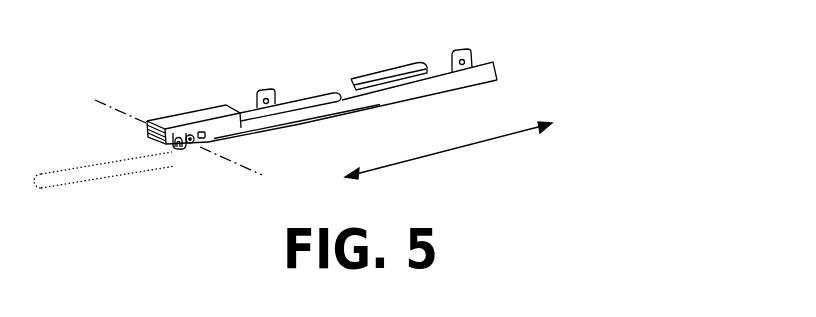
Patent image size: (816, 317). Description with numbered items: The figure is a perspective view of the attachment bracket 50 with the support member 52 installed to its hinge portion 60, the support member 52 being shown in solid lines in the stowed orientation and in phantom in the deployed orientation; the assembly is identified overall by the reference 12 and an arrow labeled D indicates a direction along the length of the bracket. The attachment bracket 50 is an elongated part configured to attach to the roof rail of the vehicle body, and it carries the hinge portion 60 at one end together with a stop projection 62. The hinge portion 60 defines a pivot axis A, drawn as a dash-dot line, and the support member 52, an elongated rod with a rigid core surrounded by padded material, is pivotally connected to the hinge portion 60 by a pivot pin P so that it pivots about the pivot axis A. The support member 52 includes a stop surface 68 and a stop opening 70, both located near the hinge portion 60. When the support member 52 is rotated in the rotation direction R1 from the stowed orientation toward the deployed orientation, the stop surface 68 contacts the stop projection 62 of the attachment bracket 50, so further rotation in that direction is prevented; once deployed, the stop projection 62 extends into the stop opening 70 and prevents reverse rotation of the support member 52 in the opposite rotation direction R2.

The rail assembly 12 is at (277, 63).
The attachment bracket 50 is at (222, 106).
The support member 52 is at (291, 106).
The hinge portion 60 is at (176, 128).
The stop projection 62 is at (163, 150).
The stop surface 68 is at (202, 132).
The stop opening 70 is at (180, 139).
The pivot pin P is at (189, 144).
The pivot axis A is at (127, 113).
The rotation direction R1 is at (165, 214).
The rotation direction R2 is at (245, 123).
The direction of travel D is at (445, 156).